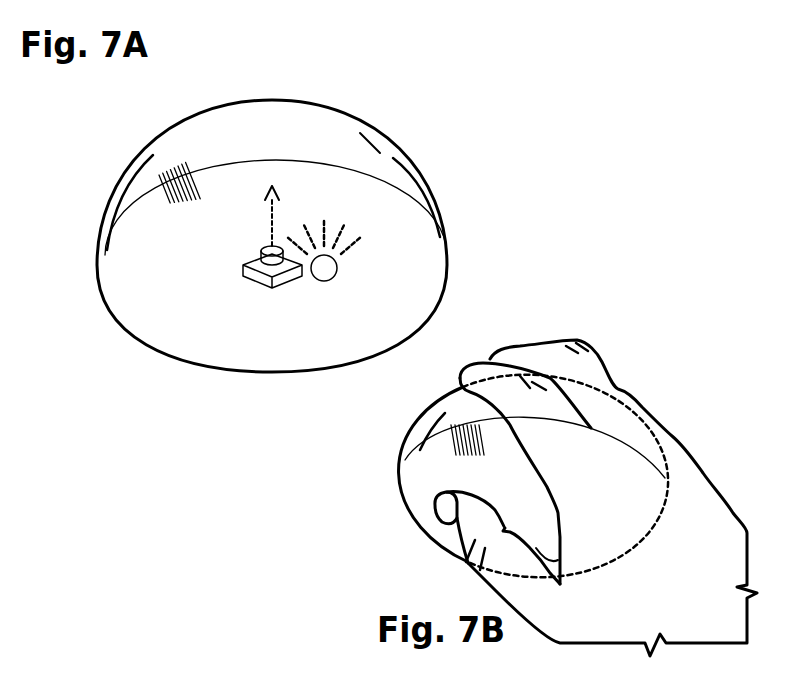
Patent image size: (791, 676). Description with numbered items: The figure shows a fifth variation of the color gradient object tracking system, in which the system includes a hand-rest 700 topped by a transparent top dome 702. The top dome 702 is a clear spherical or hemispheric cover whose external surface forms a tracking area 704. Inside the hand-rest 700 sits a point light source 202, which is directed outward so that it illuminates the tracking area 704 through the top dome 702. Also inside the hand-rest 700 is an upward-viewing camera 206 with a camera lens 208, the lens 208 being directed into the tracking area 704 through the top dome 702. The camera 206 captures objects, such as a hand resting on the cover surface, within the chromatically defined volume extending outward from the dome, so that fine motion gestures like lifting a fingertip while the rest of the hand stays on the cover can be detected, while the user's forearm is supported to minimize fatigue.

In FIG. 7A, the hand-rest 700 is at (193, 122).
In FIG. 7B, the hand-rest 700 is at (513, 484).
In FIG. 7A, the top dome 702 is at (377, 149).
In FIG. 7A, the tracking area 704 is at (274, 115).
In FIG. 7A, the light source 202 is at (327, 268).
In FIG. 7A, the camera 206 is at (244, 268).
In FIG. 7A, the camera lens 208 is at (262, 250).